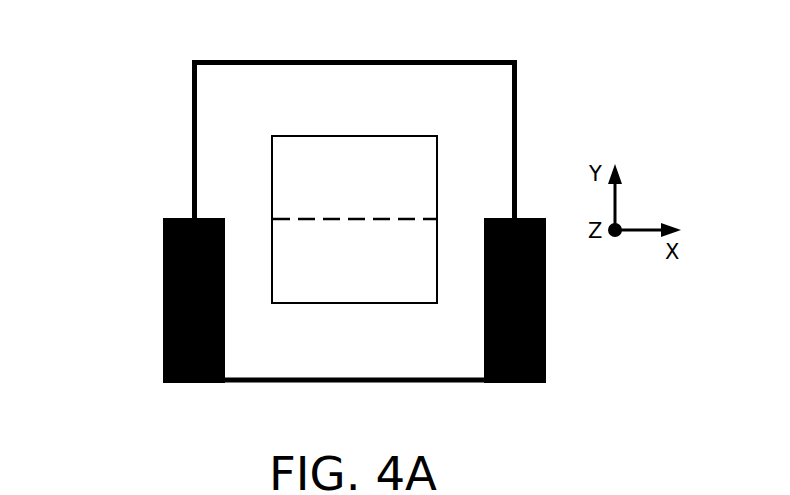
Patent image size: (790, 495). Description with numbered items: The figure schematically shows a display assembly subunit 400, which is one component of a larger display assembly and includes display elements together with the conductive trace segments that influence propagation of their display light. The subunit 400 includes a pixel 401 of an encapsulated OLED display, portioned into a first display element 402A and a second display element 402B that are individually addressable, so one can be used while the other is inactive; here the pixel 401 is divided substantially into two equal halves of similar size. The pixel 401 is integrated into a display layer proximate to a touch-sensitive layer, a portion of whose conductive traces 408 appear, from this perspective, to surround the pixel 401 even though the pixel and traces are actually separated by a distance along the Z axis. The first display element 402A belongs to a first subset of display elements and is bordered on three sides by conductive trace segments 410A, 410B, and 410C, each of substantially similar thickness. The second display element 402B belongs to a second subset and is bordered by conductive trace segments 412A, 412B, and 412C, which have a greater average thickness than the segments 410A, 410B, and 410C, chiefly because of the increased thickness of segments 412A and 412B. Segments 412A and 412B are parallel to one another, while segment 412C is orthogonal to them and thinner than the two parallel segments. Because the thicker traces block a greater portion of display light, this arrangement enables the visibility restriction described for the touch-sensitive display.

The display assembly subunit 400 is at (176, 27).
The pixel 401 is at (287, 110).
The first display element 402A is at (390, 135).
The second display element 402B is at (375, 304).
The conductive traces 408 is at (100, 186).
The conductive trace segment 410A is at (192, 163).
The conductive trace segment 410B is at (517, 163).
The conductive trace segment 410C is at (337, 58).
The conductive trace segment 412A is at (162, 361).
The conductive trace segment 412B is at (580, 348).
The conductive trace segment 412C is at (360, 384).